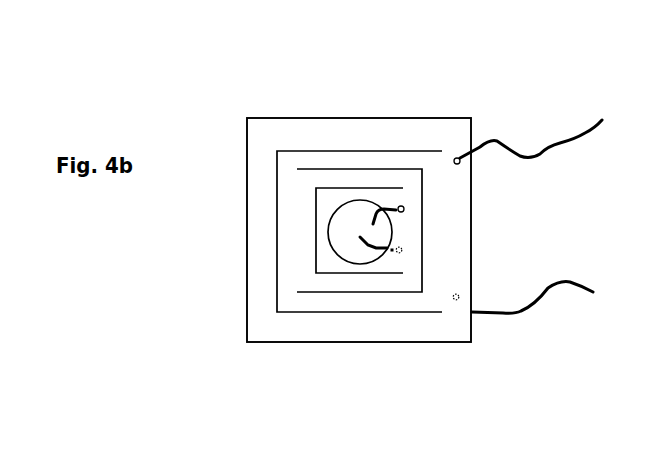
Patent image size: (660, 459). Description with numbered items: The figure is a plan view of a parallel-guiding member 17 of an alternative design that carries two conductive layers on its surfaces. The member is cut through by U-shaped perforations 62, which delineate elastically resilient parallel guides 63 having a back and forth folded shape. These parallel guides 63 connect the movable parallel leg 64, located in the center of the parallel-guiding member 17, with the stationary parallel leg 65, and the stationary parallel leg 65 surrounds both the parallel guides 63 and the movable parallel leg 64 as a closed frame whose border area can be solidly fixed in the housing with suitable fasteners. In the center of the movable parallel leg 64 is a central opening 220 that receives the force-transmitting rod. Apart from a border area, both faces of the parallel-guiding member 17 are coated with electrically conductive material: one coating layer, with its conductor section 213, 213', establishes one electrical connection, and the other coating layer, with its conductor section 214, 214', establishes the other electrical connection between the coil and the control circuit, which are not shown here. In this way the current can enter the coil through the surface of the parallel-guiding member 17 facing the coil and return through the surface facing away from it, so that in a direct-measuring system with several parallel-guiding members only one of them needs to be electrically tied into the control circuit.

The parallel-guiding member 17 is at (376, 228).
The U-shaped perforations 62 is at (336, 187).
The parallel guides 63 is at (293, 250).
The movable parallel leg 64 is at (402, 231).
The stationary parallel leg 65 is at (262, 228).
The conductor section 213 is at (386, 329).
The conductor section 214 is at (330, 316).
The central opening 220 is at (367, 221).
The conductor section 213' is at (528, 104).
The conductor section 214' is at (532, 329).